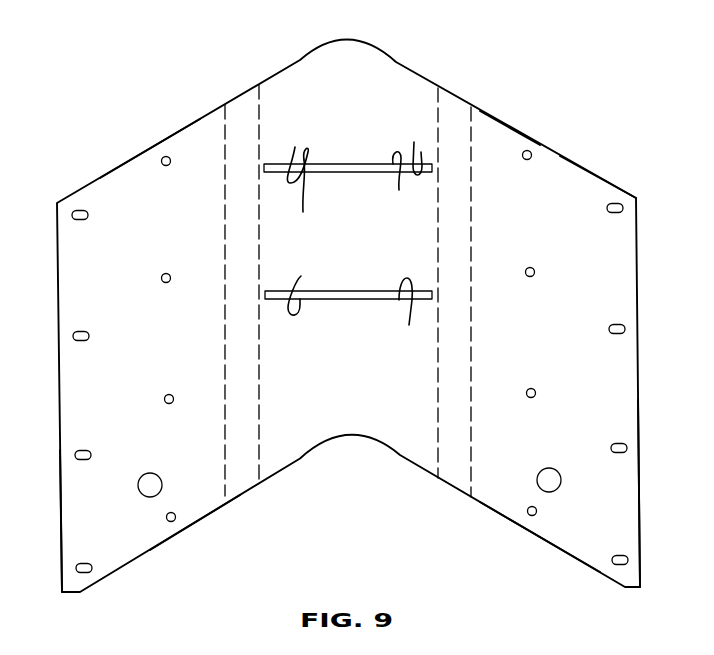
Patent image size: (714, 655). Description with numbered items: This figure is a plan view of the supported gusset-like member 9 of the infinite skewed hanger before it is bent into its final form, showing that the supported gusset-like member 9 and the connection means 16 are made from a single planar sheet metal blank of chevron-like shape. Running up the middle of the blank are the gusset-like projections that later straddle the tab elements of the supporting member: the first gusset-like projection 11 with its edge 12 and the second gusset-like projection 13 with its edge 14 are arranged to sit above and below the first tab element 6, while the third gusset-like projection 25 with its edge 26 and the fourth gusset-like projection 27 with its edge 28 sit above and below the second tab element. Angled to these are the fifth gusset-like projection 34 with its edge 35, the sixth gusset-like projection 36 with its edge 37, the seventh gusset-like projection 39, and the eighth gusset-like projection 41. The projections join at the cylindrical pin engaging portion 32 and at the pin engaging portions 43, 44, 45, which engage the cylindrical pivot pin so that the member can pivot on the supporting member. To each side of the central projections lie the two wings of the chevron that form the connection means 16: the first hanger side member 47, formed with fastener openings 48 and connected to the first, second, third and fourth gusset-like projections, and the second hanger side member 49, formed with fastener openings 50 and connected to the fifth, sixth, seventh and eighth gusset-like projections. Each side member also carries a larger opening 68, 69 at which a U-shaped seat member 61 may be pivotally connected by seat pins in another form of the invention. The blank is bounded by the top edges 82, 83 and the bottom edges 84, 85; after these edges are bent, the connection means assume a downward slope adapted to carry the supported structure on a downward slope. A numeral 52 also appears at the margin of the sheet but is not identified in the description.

The supported gusset-like member 9 is at (414, 61).
The first gusset-like projection 11 is at (288, 128).
The edge 12 is at (304, 154).
The second gusset-like projection 13 is at (283, 219).
The edge 14 is at (316, 191).
The connection means 16 is at (604, 172).
The third gusset-like projection 25 is at (278, 276).
The edge 26 is at (313, 289).
The fourth gusset-like projection 27 is at (283, 347).
The edge 28 is at (417, 309).
The cylindrical pin engaging portion 32 is at (366, 159).
The fifth gusset-like projection 34 is at (408, 107).
The edge 35 is at (415, 148).
The sixth gusset-like projection 36 is at (423, 198).
The edge 37 is at (397, 187).
The seventh gusset-like projection 39 is at (423, 267).
The eighth gusset-like projection 41 is at (423, 351).
The pin engaging portion 43 is at (366, 197).
The pin engaging portion 44 is at (372, 284).
The pin engaging portion 45 is at (373, 329).
The first hanger side member 47 is at (57, 543).
The fastener openings 48 is at (162, 161).
The second hanger side member 49 is at (650, 508).
The fastener openings 50 is at (614, 333).
The adjacent figure numeral 52 is at (665, 650).
The first tab element 6 is at (709, 241).
The U-shaped seat member 61 is at (703, 438).
The opening 68 is at (148, 476).
The opening 69 is at (541, 477).
The top edge 82 is at (197, 117).
The top edge 83 is at (513, 127).
The bottom edge 84 is at (205, 517).
The bottom edge 85 is at (542, 540).